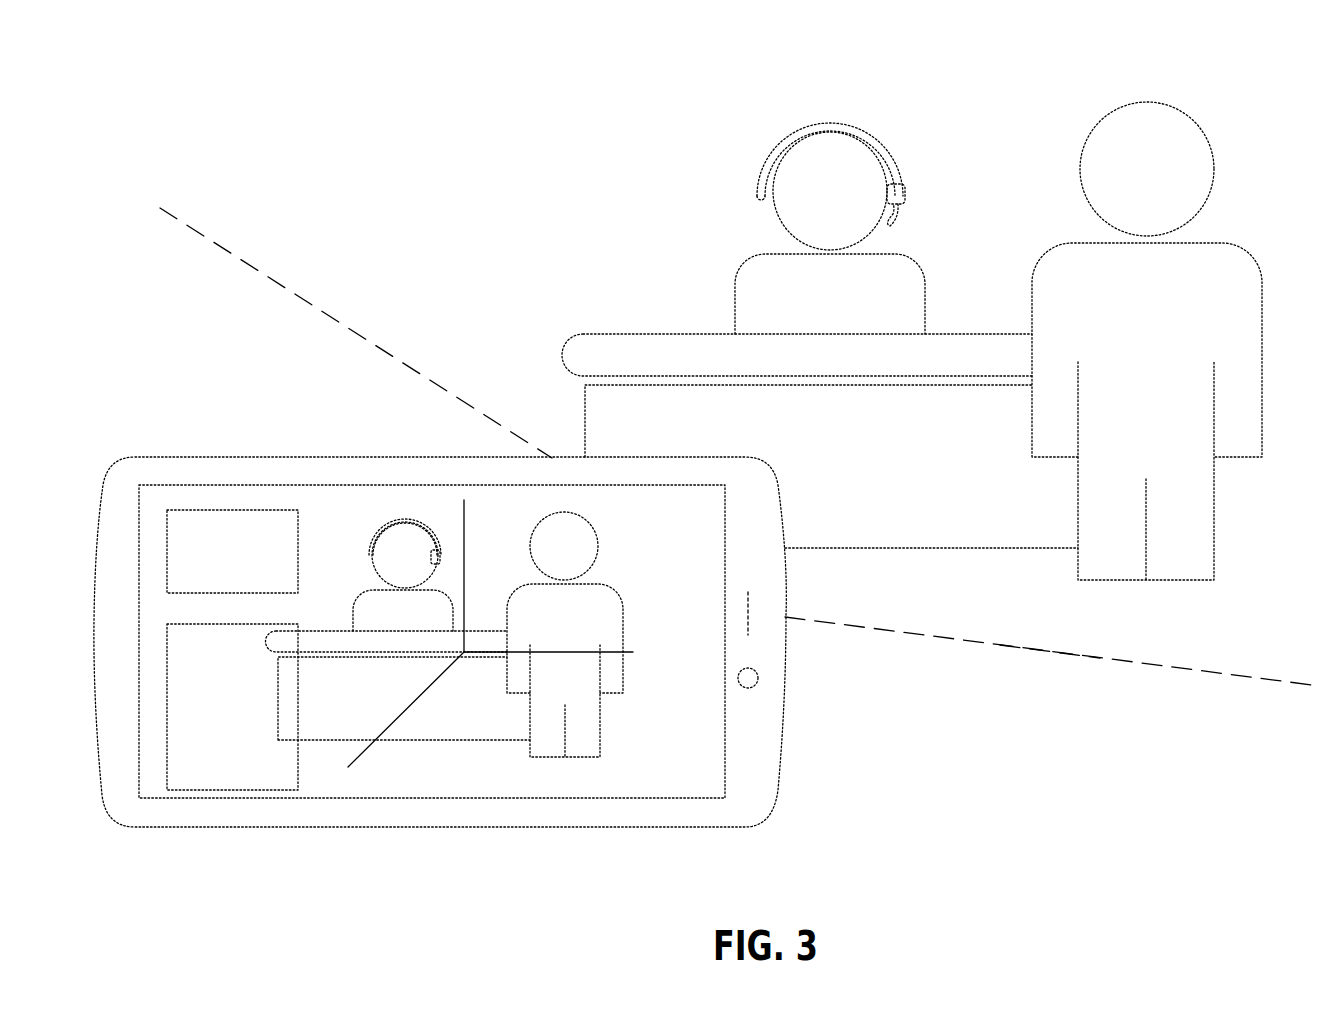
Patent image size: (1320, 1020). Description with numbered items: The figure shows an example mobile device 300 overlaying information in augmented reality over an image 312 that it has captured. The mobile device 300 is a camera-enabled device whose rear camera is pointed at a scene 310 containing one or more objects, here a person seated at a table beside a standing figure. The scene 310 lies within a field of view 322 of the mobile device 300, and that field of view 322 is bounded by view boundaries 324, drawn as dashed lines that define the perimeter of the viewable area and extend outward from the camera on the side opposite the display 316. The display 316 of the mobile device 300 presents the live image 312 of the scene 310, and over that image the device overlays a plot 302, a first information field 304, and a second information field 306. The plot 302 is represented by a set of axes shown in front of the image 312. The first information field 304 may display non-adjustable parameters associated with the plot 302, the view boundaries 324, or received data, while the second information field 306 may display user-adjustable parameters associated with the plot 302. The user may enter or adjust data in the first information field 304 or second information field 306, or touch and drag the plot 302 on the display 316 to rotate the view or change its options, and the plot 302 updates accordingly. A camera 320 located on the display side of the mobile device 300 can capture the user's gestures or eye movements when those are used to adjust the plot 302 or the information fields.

The mobile device 300 is at (345, 421).
The plot 302 is at (355, 771).
The first information field 304 is at (232, 551).
The second information field 306 is at (232, 707).
The scene 310 is at (776, 101).
The image 312 is at (538, 510).
The display 316 is at (656, 774).
The camera 320 is at (758, 678).
The field of view 322 is at (1025, 617).
The view boundaries 324 is at (217, 243).